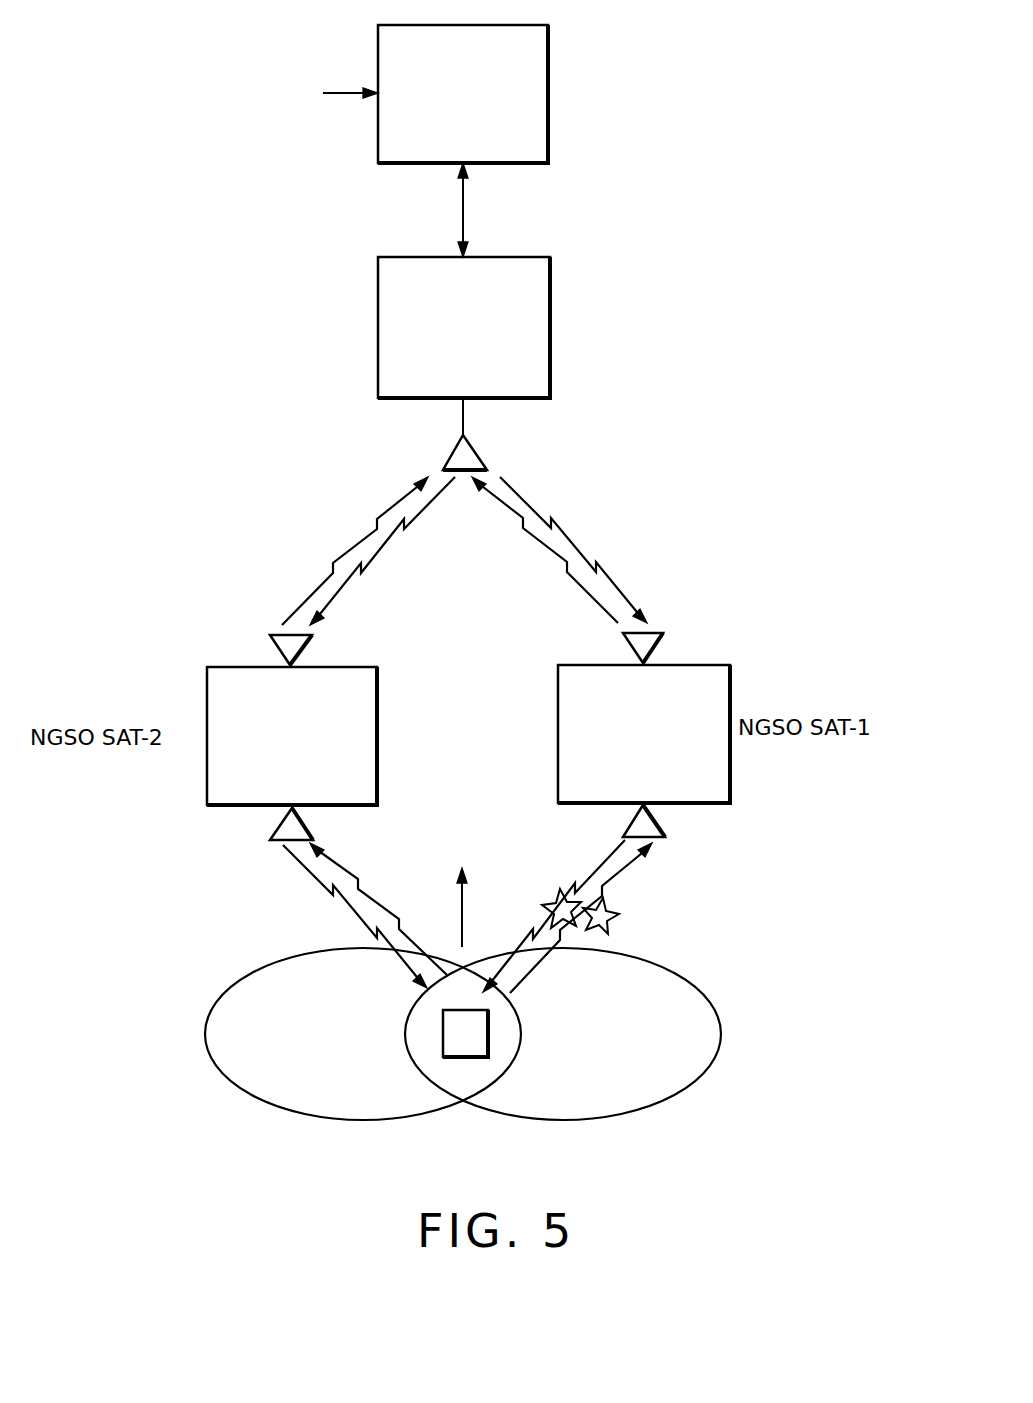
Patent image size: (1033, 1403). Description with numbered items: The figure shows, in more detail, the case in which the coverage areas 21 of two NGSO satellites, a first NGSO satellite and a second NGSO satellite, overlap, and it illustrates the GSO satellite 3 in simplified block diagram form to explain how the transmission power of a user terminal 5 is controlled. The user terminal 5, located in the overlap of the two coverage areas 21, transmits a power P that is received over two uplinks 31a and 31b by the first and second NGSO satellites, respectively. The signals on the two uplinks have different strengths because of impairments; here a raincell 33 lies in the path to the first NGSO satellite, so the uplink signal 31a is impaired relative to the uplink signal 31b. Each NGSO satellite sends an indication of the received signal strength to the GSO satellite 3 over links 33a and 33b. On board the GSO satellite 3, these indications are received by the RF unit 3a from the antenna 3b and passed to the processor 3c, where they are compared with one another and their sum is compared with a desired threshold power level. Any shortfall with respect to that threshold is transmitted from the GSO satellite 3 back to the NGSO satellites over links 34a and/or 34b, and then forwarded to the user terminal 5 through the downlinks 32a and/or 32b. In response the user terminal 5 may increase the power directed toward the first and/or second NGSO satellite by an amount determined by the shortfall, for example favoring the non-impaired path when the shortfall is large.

The GSO satellite 3 is at (409, 243).
The RF unit 3a is at (552, 278).
The antenna 3b is at (478, 452).
The processor 3c is at (552, 43).
The user terminal 5 is at (460, 1057).
The earth coverage area 21 is at (250, 1095).
The uplink 31a is at (618, 887).
The uplink 31b is at (337, 873).
The downlink 32a is at (605, 862).
The downlink 32b is at (307, 873).
The raincell 33 is at (557, 900).
The link 33a is at (500, 508).
The link 33b is at (317, 593).
The link 34a is at (518, 492).
The link 34b is at (348, 593).
The transmitted power P is at (463, 894).